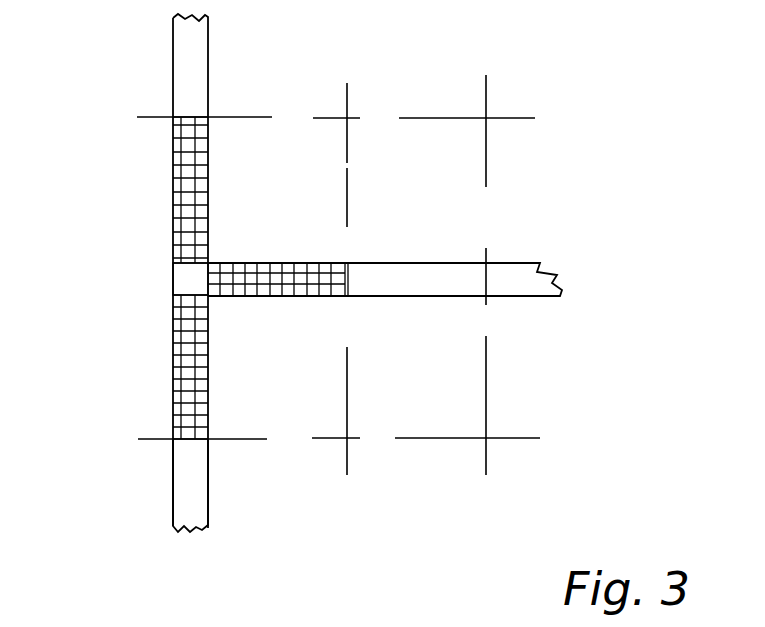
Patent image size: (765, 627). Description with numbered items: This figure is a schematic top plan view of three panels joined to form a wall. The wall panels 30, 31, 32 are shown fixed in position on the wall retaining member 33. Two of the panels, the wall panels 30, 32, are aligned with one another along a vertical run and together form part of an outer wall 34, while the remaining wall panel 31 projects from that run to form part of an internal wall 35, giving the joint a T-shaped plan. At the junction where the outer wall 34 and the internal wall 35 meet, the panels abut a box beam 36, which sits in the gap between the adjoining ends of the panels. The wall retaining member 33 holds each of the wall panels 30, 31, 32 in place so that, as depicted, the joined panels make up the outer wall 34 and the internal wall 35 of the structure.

The wall panel 30 is at (175, 229).
The wall panel 31 is at (328, 263).
The wall panel 32 is at (173, 390).
The wall retaining member 33 is at (175, 488).
The outer wall 34 is at (146, 168).
The internal wall 35 is at (518, 308).
The box beam 36 is at (175, 285).